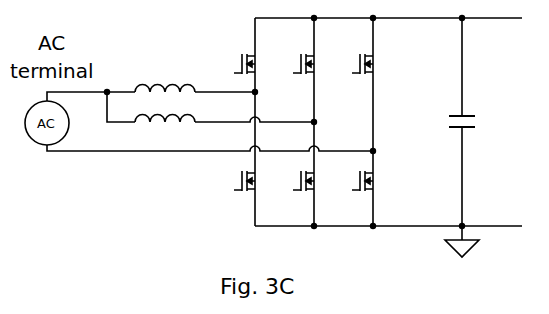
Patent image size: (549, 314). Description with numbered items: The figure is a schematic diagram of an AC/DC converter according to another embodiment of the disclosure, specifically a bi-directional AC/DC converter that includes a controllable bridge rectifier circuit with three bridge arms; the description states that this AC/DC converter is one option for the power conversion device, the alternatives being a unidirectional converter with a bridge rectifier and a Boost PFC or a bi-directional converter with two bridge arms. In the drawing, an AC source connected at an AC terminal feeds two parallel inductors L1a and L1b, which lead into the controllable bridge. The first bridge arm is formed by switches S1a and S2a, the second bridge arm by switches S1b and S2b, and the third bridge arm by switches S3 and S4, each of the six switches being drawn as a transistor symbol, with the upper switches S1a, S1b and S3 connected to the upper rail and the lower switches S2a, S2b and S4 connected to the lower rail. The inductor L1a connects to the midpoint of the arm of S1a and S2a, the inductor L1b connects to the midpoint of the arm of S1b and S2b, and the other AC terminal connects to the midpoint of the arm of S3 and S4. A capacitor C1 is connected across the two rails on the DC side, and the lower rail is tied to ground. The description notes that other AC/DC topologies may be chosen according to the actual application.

The first inductor L1a is at (165, 79).
The second inductor L1b is at (165, 110).
The switch S1a is at (227, 64).
The switch S1b is at (289, 64).
The switch S3 is at (350, 64).
The switch S2a is at (227, 181).
The switch S2b is at (289, 181).
The switch S4 is at (350, 181).
The capacitor C1 is at (449, 123).